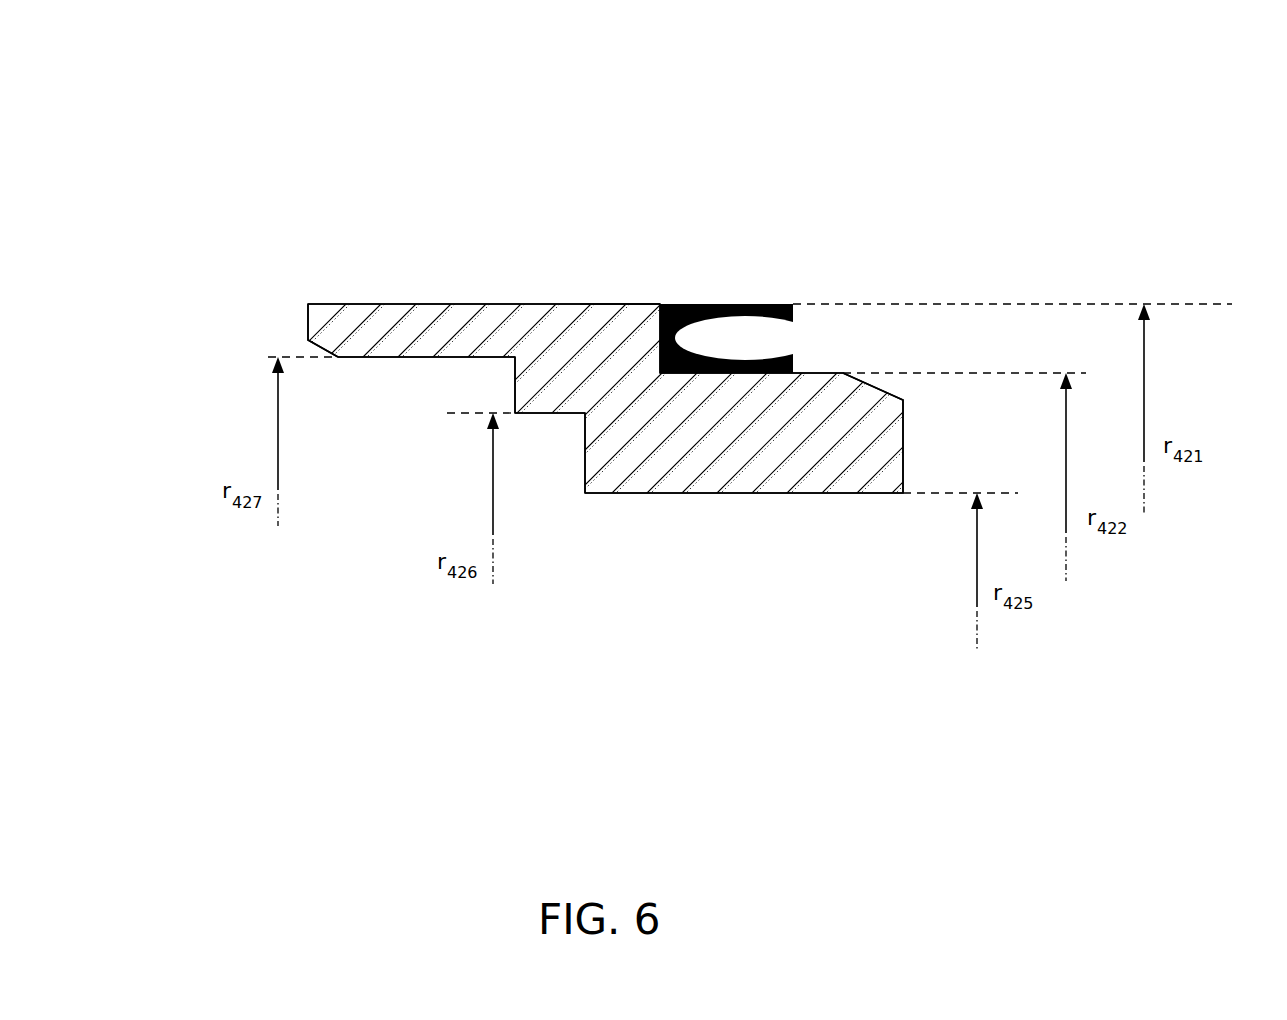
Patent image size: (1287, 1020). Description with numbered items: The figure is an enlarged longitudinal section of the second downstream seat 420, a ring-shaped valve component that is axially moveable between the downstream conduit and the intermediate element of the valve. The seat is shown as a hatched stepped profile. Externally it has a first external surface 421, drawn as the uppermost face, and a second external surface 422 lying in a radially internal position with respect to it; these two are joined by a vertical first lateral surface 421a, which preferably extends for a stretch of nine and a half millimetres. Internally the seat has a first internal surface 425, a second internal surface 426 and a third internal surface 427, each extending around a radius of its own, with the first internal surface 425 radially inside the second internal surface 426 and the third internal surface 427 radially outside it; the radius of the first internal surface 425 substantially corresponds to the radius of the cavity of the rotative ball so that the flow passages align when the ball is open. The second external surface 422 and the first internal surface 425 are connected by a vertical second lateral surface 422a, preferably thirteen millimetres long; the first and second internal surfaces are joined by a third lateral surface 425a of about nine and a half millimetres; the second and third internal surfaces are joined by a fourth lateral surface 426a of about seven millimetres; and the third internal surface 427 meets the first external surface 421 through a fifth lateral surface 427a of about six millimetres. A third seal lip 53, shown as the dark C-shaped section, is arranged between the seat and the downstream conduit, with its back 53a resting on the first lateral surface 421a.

The second downstream seat 420 is at (596, 104).
The third seal lip 53 is at (705, 304).
The back of the third seal lip 53a is at (658, 305).
The first external surface 421 is at (490, 303).
The first lateral surface 421a is at (623, 303).
The second external surface 422 is at (752, 360).
The second lateral surface 422a is at (905, 440).
The first internal surface 425 is at (818, 494).
The third lateral surface 425a is at (583, 453).
The second internal surface 426 is at (530, 416).
The fourth lateral surface 426a is at (507, 385).
The third internal surface 427 is at (368, 359).
The fifth lateral surface 427a is at (308, 325).